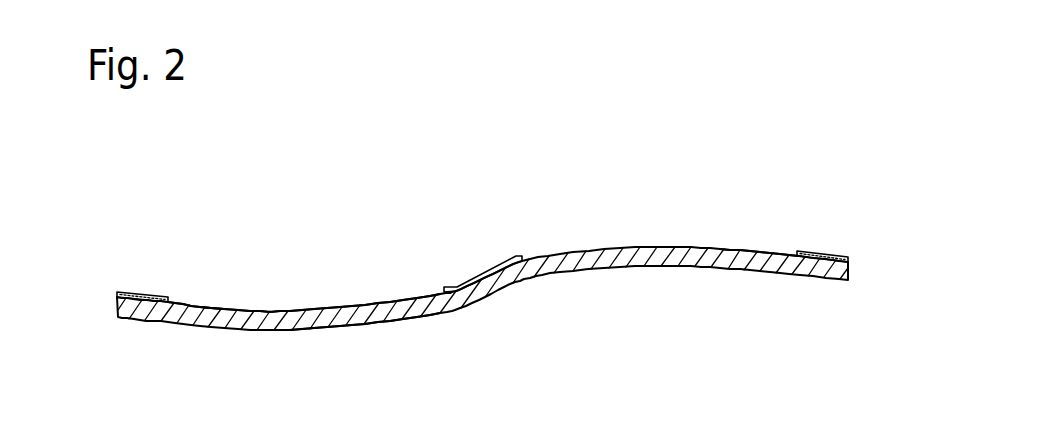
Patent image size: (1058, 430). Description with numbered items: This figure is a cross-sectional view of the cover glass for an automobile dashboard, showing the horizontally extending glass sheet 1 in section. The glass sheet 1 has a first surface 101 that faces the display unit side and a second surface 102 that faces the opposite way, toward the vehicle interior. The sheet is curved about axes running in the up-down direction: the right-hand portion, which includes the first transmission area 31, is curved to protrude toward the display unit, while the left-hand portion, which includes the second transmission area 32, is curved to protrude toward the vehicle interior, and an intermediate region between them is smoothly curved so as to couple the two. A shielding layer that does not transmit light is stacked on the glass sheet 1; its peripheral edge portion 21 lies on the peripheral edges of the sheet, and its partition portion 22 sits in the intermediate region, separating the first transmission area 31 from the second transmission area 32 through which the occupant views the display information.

The glass sheet 1 is at (775, 281).
The peripheral edge portion 21 is at (155, 292).
The partition portion 22 is at (488, 267).
The first transmission area 31 is at (777, 252).
The second transmission area 32 is at (183, 303).
The first surface 101 is at (323, 310).
The second surface 102 is at (373, 331).